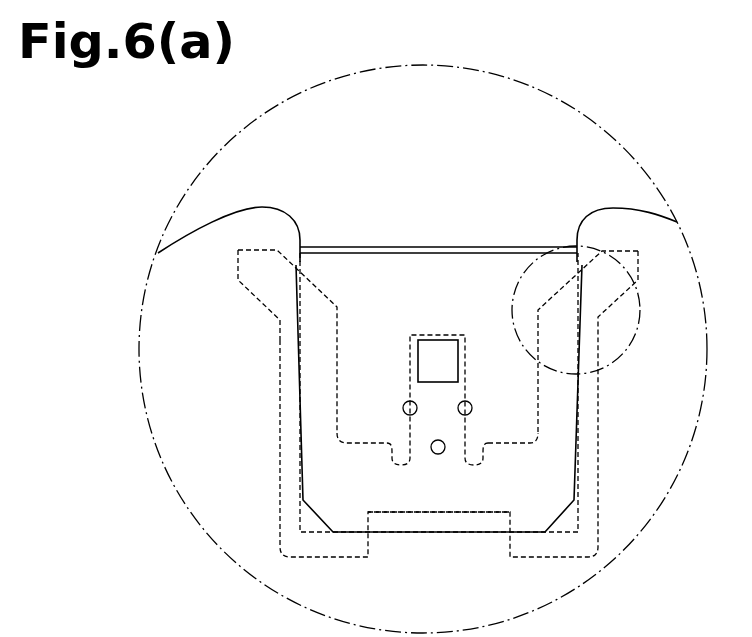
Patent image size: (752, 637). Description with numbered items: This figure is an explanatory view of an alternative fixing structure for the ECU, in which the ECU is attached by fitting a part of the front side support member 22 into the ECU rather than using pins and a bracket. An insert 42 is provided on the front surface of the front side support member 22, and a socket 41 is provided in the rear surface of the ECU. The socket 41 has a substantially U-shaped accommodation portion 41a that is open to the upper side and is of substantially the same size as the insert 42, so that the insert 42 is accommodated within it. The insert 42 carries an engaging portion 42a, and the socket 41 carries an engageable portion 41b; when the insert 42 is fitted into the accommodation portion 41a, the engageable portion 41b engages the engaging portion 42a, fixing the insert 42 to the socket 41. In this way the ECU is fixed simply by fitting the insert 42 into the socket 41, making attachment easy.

The front side support member 22 is at (613, 178).
The socket 41 is at (598, 417).
The accommodation portion 41a is at (302, 327).
The engageable portion 41b is at (430, 335).
The insert 42 is at (467, 532).
The engaging portion 42a is at (464, 416).